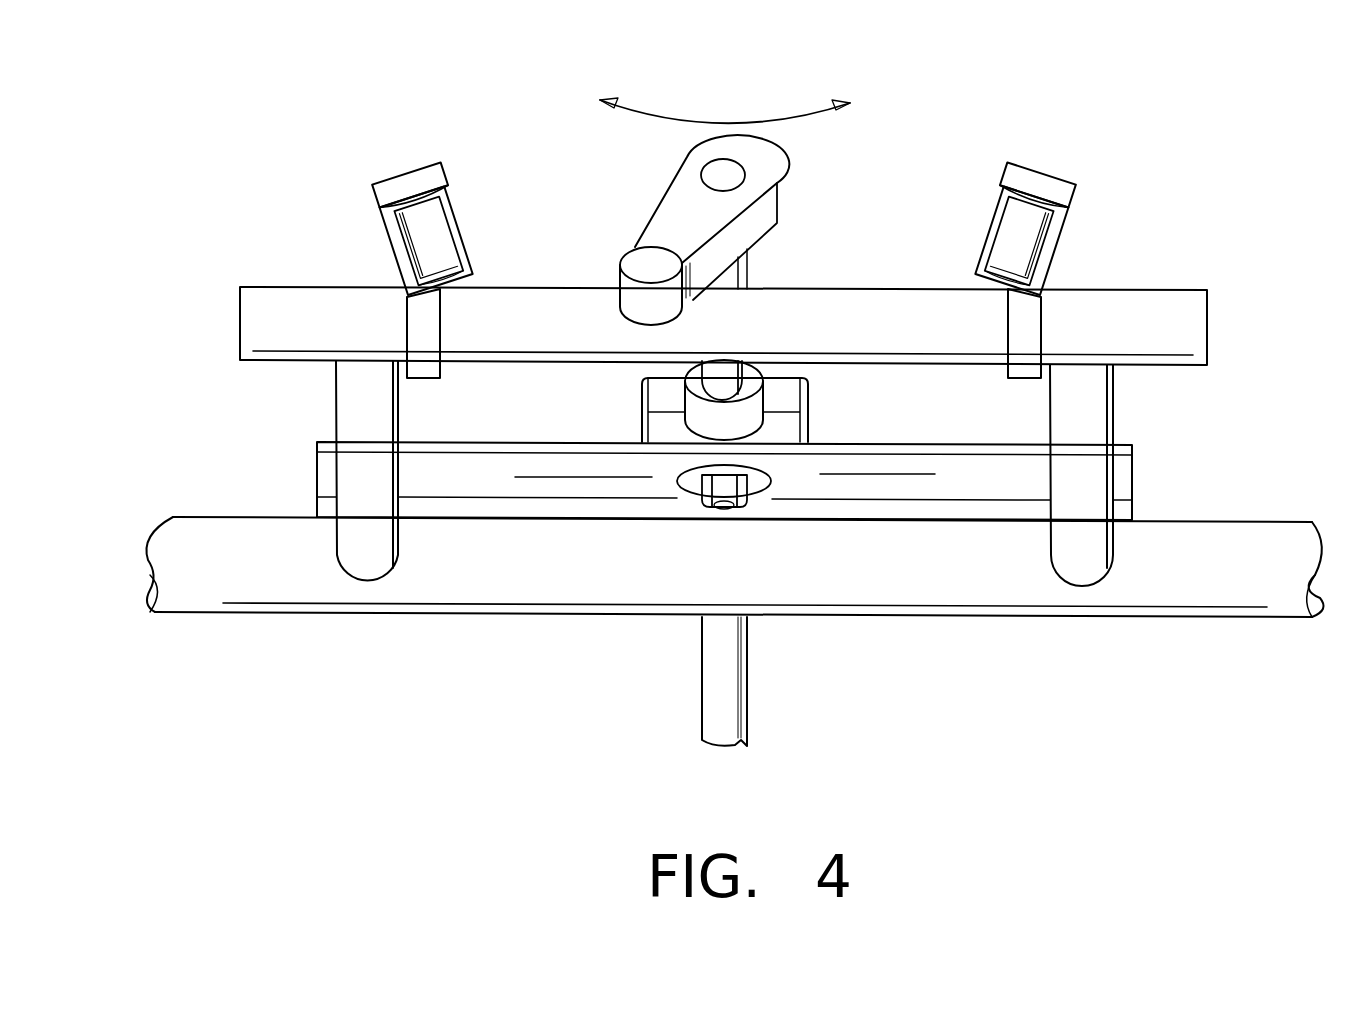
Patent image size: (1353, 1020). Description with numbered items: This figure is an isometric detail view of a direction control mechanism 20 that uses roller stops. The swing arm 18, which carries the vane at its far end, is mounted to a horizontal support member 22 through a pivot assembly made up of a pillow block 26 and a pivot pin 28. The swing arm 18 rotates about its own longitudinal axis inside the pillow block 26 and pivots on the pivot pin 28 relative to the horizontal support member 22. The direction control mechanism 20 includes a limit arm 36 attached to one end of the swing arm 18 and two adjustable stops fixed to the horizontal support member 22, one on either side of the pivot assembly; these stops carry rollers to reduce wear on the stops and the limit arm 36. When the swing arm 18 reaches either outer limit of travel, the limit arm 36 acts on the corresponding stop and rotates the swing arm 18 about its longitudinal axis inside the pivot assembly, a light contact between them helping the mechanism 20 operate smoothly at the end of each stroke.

The swing arm 18 is at (730, 685).
The direction control mechanism 20 is at (932, 122).
The horizontal support member 22 is at (1160, 535).
The pillow block 26 is at (808, 394).
The pivot pin 28 is at (724, 509).
The limit arm 36 is at (632, 258).